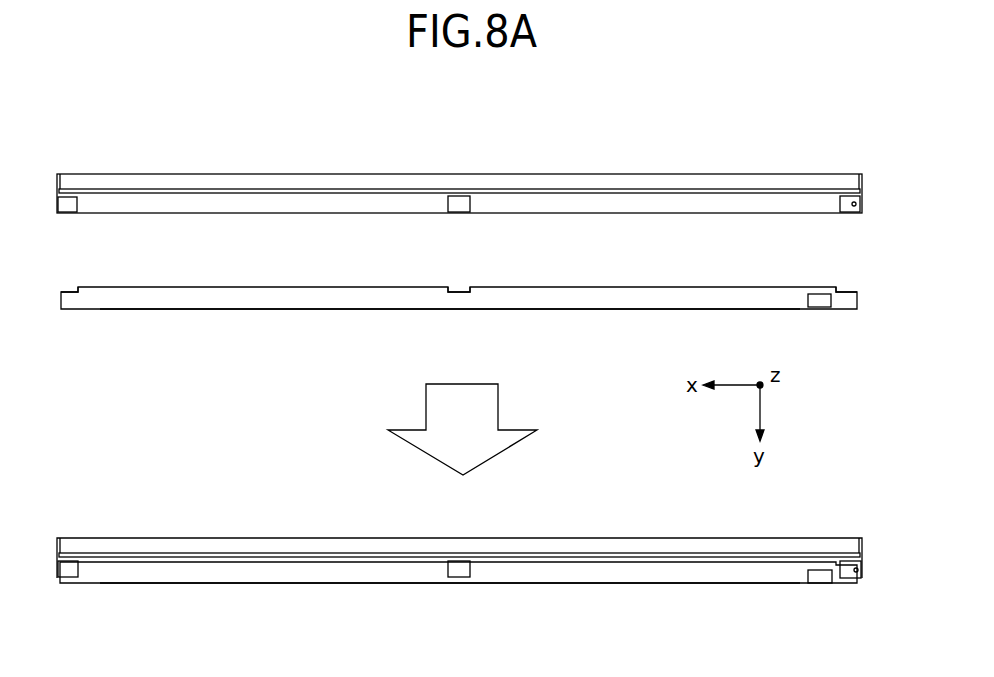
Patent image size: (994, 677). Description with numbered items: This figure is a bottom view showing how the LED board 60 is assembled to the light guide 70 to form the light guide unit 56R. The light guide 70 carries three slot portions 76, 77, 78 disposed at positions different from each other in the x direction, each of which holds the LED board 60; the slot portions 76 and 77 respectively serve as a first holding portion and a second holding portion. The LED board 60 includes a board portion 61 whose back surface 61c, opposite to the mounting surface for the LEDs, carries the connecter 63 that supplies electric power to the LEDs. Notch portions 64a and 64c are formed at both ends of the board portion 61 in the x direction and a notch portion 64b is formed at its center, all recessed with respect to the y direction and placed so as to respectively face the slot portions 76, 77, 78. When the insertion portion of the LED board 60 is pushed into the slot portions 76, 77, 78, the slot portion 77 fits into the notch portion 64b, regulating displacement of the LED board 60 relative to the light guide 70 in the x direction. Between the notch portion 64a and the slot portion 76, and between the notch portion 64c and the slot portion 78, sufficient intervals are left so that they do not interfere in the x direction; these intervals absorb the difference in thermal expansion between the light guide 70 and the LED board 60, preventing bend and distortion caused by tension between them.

The light guide unit 56R is at (477, 356).
The light guide 70 is at (318, 172).
The LED board 60 is at (437, 444).
The board portion 61 is at (437, 444).
The back surface 61c is at (570, 300).
The connecter 63 is at (822, 302).
The notch portion 64a is at (845, 292).
The notch portion 64b is at (455, 290).
The notch portion 64c is at (78, 290).
The slot portion 76 is at (861, 205).
The slot portion 77 is at (471, 205).
The slot portion 78 is at (78, 205).